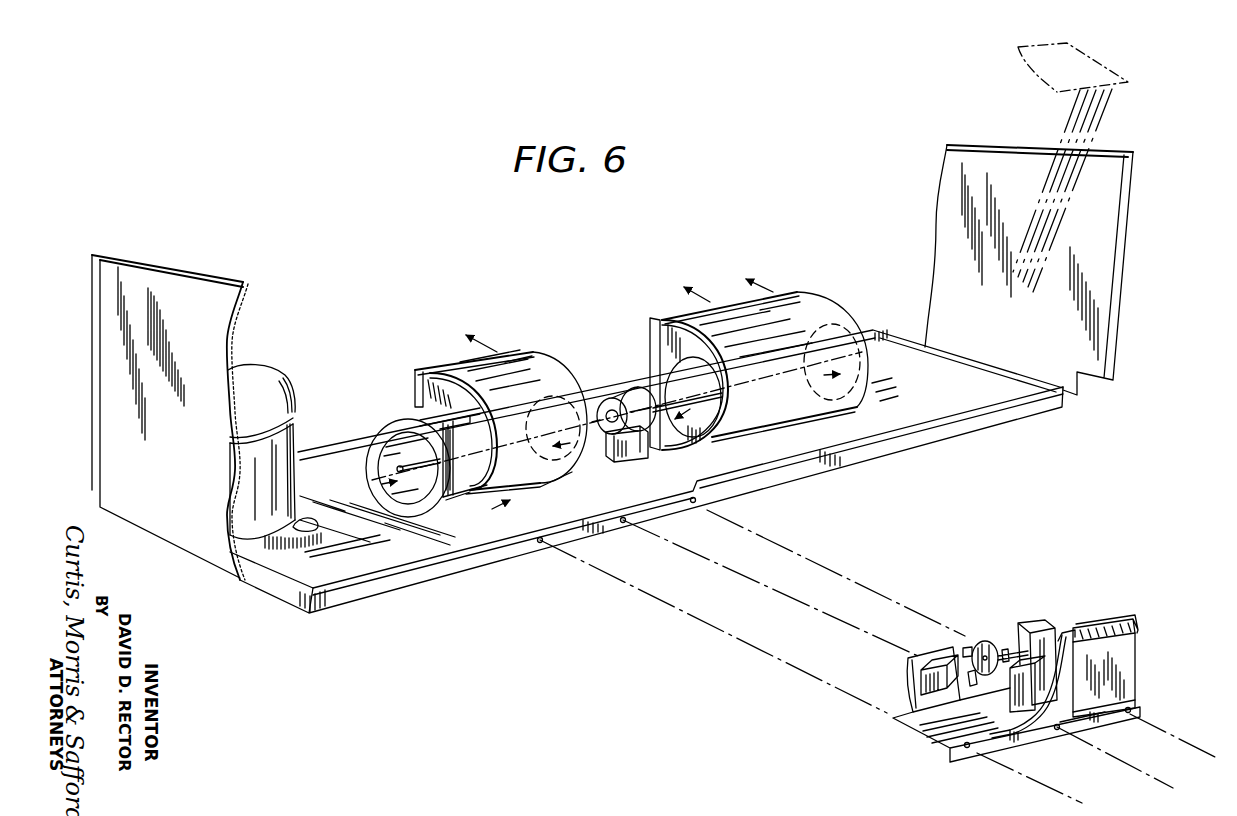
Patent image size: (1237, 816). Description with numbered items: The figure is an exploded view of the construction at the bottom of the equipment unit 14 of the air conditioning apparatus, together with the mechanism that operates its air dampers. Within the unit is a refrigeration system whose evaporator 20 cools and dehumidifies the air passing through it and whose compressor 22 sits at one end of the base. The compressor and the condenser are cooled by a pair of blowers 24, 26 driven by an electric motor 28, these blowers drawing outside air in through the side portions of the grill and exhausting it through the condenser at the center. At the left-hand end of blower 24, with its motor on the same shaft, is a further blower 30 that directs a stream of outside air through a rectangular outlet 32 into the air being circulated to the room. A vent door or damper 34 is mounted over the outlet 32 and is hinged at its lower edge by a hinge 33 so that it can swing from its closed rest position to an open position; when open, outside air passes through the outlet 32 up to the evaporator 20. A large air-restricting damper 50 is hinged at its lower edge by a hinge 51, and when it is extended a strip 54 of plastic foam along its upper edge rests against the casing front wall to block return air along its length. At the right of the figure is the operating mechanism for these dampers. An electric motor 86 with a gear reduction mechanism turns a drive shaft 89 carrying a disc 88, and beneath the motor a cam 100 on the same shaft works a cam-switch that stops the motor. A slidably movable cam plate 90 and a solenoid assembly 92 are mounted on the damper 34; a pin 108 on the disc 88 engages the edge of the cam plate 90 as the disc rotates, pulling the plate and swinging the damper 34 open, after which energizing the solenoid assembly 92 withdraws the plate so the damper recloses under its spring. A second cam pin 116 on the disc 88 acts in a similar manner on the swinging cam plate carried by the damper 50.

The equipment unit 14 is at (295, 630).
The evaporator 20 is at (1112, 116).
The compressor 22 is at (283, 382).
The blower 24 is at (508, 348).
The blower 26 is at (785, 290).
The electric motor 28 is at (617, 388).
The blower 30 is at (404, 419).
The rectangular outlet 32 is at (462, 486).
The hinge 33 is at (920, 718).
The vent door or damper 34 is at (905, 662).
The air-restricting damper 50 is at (1133, 681).
The hinge 51 is at (1136, 703).
The strip of plastic foam 54 is at (1138, 636).
The electric motor 86 is at (1034, 624).
The disc 88 is at (986, 641).
The drive shaft 89 is at (1005, 646).
The cam plate 90 is at (970, 684).
The solenoid assembly 92 is at (921, 681).
The cam 100 is at (1060, 638).
The pin 108 is at (964, 648).
The cam pin 116 is at (1044, 696).